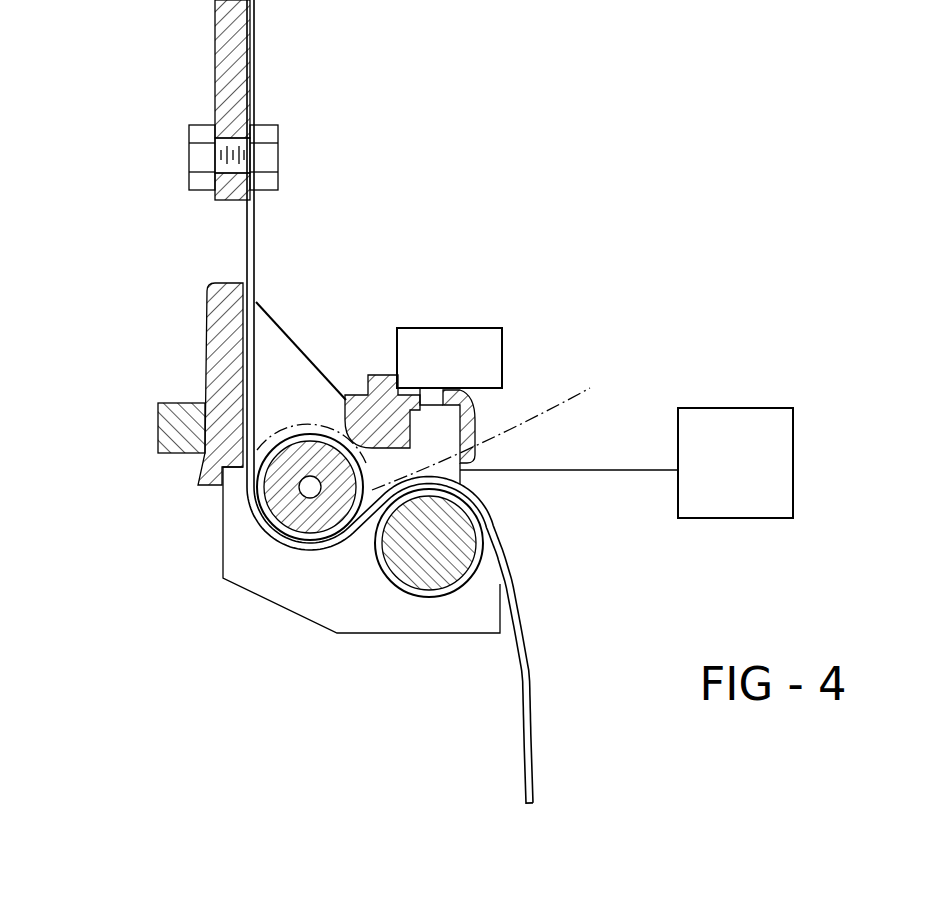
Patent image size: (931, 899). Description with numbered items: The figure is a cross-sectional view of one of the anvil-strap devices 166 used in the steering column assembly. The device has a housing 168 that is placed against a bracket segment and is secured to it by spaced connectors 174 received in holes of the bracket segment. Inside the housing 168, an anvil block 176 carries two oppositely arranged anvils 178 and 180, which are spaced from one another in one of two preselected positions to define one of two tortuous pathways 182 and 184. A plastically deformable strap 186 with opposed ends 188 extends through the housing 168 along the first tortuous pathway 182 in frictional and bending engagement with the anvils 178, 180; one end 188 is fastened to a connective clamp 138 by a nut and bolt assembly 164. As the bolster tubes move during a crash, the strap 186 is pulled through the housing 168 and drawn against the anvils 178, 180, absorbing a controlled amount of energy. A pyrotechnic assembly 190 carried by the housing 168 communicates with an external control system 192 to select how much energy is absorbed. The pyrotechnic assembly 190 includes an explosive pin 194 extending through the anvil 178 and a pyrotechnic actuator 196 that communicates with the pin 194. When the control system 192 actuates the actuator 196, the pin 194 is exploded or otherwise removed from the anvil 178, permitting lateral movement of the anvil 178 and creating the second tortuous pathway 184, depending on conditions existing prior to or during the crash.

The connective clamp 138 is at (215, 57).
The nut and bolt assembly 164 is at (278, 156).
The anvil-strap device 166 is at (106, 312).
The housing 168 is at (315, 365).
The spaced connectors 174 is at (158, 433).
The anvil block 176 is at (287, 610).
The anvil 178 is at (280, 498).
The anvil 180 is at (442, 540).
The first tortuous pathway 182 is at (373, 532).
The second tortuous pathway 184 is at (434, 425).
The plastically deformable strap 186 is at (256, 248).
The opposed ends 188 is at (258, 48).
The pyrotechnic assembly 190 is at (510, 362).
The control system 192 is at (748, 408).
The explosive pin 194 is at (318, 498).
The pyrotechnic actuator 196 is at (460, 328).